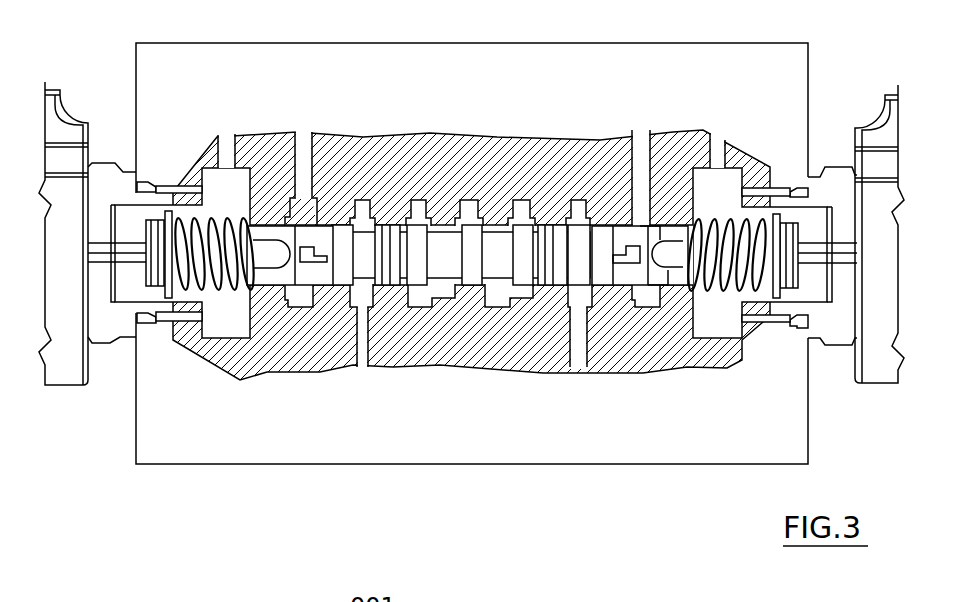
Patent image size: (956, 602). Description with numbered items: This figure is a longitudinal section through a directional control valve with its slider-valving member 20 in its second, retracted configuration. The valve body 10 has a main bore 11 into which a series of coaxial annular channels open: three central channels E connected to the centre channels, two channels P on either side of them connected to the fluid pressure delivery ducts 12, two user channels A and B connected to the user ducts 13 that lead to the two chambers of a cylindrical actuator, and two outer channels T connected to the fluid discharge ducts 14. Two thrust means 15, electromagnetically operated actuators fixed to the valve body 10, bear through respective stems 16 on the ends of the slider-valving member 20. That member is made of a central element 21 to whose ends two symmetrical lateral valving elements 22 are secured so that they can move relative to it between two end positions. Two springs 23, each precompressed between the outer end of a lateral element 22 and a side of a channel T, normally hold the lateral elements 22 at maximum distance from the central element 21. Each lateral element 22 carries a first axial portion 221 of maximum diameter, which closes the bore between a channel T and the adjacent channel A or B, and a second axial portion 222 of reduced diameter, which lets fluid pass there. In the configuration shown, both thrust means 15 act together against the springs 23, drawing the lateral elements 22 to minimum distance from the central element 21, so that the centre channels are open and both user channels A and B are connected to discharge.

The valve body 10 is at (401, 468).
The main bore 11 is at (398, 212).
The fluid pressure delivery duct 12 is at (362, 355).
The user duct 13 is at (303, 135).
The fluid discharge duct 14 is at (227, 142).
The thrust means 15 is at (58, 92).
The stem 16 is at (125, 262).
The slider-valving member 20 is at (497, 287).
The central element 21 is at (446, 272).
The lateral valving element 22 is at (272, 277).
The first axial portion 221 is at (650, 225).
The second axial portion 222 is at (660, 298).
The spring 23 is at (215, 290).
The annular channel T is at (215, 182).
The annular channel A is at (313, 208).
The annular channel B is at (633, 205).
The annular channel P is at (368, 200).
The central annular channel E is at (423, 202).